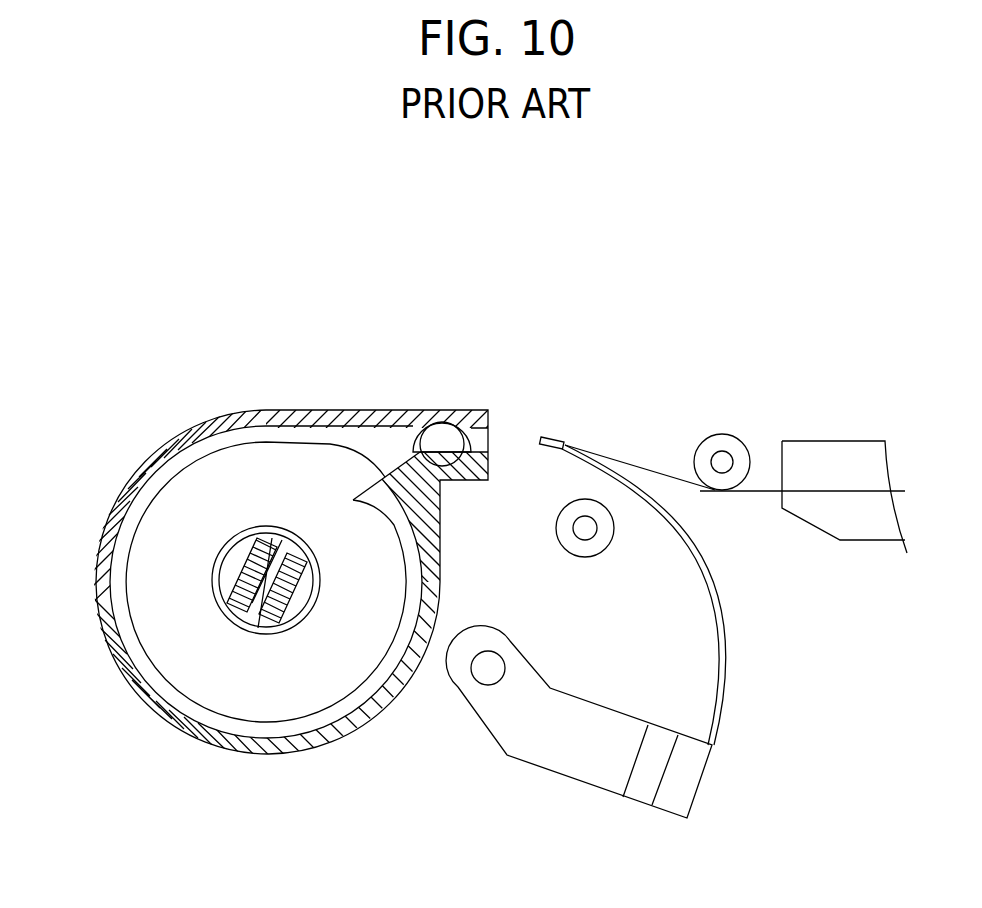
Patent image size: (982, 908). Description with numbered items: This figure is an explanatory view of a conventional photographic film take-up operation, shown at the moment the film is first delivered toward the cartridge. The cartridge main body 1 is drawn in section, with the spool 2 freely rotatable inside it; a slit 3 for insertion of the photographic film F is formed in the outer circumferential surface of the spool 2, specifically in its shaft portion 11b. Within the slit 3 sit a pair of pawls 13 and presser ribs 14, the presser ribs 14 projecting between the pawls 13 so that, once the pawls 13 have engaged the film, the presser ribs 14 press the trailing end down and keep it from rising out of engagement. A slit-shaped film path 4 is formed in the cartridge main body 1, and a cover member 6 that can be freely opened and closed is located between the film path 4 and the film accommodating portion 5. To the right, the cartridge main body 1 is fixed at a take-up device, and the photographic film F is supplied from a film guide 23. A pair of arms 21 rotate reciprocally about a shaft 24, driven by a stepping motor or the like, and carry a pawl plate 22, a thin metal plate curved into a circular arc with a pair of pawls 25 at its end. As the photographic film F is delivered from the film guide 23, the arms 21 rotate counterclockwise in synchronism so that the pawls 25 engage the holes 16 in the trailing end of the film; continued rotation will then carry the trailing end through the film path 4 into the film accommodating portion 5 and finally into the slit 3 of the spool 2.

The cartridge main body 1 is at (107, 667).
The spool 2 is at (203, 593).
The slit 3 is at (287, 537).
The film path 4 is at (477, 443).
The film accommodating portion 5 is at (362, 617).
The cover member 6 is at (428, 430).
The shaft portion 11b is at (262, 632).
The pawls 13 is at (302, 540).
The presser ribs 14 is at (243, 550).
The holes 16 is at (583, 452).
The arms 21 is at (584, 708).
The pawl plate 22 is at (729, 637).
The film guide 23 is at (836, 441).
The shaft 24 is at (489, 665).
The pawls 25 is at (556, 437).
The photographic film F is at (752, 494).